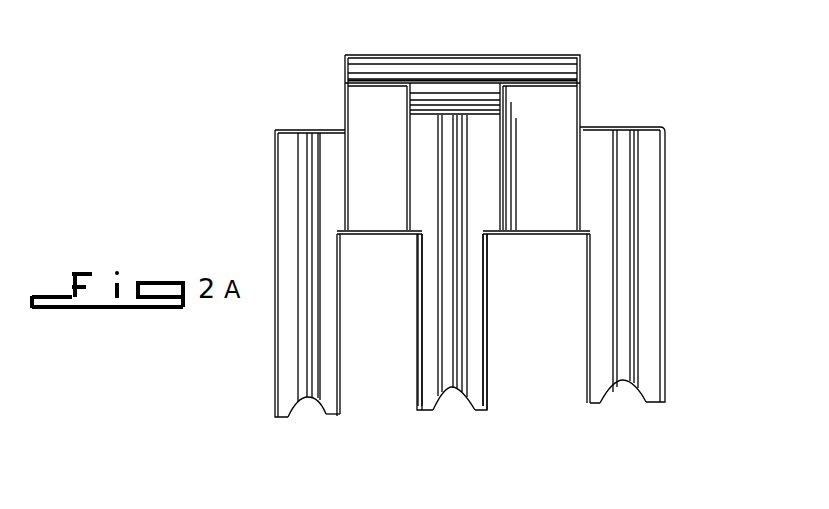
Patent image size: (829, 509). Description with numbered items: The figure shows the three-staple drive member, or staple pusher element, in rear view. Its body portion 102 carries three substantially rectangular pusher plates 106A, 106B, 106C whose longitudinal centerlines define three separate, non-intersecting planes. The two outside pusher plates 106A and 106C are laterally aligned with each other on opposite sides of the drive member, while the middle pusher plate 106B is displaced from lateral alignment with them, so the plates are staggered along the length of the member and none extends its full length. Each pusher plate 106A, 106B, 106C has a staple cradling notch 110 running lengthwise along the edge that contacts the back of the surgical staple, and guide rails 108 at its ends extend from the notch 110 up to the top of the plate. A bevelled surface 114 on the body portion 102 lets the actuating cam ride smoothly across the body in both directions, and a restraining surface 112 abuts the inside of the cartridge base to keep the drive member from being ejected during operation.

The body portion 102 is at (583, 95).
The bevelled surface 114 is at (463, 70).
The pusher plate 106A is at (277, 380).
The middle pusher plate 106B is at (492, 345).
The pusher plate 106C is at (665, 260).
The guide rails 108 is at (627, 125).
The staple cradling notch 110 is at (321, 414).
The restraining surface 112 is at (392, 235).